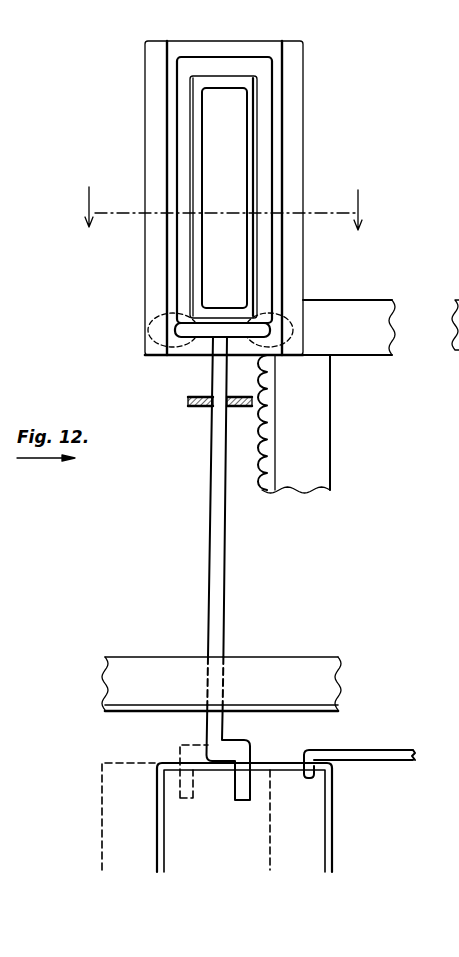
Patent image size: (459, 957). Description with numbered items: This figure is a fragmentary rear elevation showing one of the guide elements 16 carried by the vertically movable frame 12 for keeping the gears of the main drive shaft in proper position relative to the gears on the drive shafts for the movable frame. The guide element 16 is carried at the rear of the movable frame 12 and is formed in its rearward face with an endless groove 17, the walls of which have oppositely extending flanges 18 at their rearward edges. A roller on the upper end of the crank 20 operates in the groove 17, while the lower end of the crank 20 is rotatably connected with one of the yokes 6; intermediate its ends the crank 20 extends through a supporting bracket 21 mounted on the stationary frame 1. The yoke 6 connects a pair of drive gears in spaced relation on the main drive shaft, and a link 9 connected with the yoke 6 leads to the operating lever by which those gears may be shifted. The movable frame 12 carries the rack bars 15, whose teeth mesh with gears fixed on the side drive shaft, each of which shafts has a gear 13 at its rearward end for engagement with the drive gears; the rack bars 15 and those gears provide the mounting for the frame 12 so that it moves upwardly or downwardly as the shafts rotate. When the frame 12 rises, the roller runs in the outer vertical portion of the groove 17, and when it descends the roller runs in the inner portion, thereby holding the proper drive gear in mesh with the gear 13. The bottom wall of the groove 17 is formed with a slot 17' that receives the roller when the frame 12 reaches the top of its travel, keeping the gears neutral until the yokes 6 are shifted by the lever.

The stationary frame 1 is at (277, 668).
The yoke 6 is at (285, 763).
The link 9 is at (382, 750).
The vertically movable frame 12 is at (348, 308).
The gear 13 is at (225, 208).
The rack bar 15 is at (267, 432).
The guide element 16 is at (293, 82).
The endless groove 17 is at (269, 175).
The slot 17' is at (222, 350).
The flange 18 is at (247, 142).
The crank 20 is at (218, 471).
The supporting bracket 21 is at (202, 397).